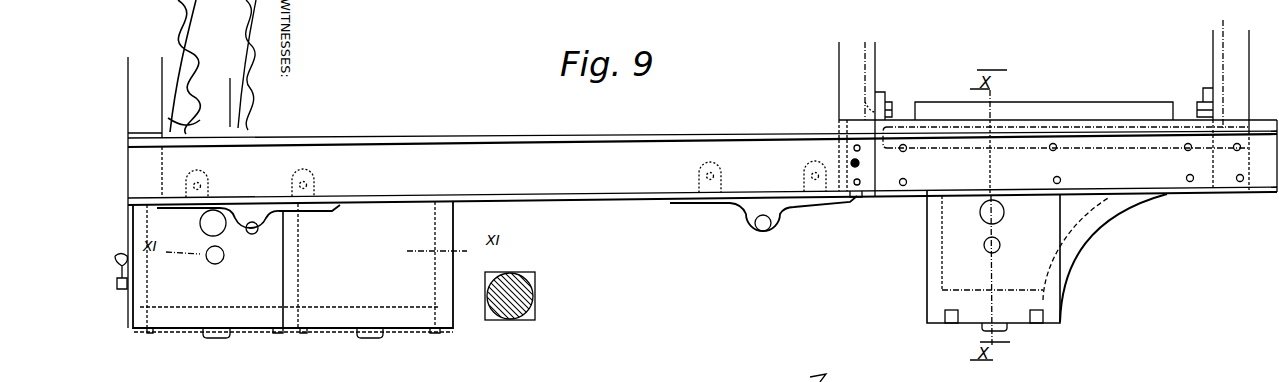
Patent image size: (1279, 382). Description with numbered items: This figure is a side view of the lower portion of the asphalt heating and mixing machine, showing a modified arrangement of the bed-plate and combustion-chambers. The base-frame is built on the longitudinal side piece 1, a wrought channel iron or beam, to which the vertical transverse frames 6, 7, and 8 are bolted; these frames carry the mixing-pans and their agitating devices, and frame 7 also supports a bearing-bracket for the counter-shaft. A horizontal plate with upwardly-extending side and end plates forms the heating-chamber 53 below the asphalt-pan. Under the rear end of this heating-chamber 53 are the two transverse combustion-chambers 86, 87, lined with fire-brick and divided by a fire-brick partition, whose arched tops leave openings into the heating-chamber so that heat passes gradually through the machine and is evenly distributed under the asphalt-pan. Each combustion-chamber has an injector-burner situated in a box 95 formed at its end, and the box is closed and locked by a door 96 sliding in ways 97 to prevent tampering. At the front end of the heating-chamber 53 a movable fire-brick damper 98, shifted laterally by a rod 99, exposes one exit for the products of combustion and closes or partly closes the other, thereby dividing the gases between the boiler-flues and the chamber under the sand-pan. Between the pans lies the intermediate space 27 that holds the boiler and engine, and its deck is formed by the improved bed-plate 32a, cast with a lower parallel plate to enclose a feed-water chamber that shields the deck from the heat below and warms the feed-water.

The longitudinal side piece 1 is at (702, 162).
The heating-chamber 53 is at (702, 128).
The vertical transverse frame 8 is at (180, 147).
The box 95 is at (486, 264).
The door 96 is at (177, 308).
The ways 97 is at (294, 330).
The transverse combustion-chamber 86 is at (202, 346).
The transverse combustion-chamber 87 is at (388, 346).
The vertical transverse frame 7 is at (1058, 119).
The damper 98 is at (857, 196).
The rod 99 is at (851, 161).
The intermediate space 27 is at (1044, 93).
The bed-plate 32a is at (1127, 120).
The vertical transverse frame 6 is at (1223, 106).